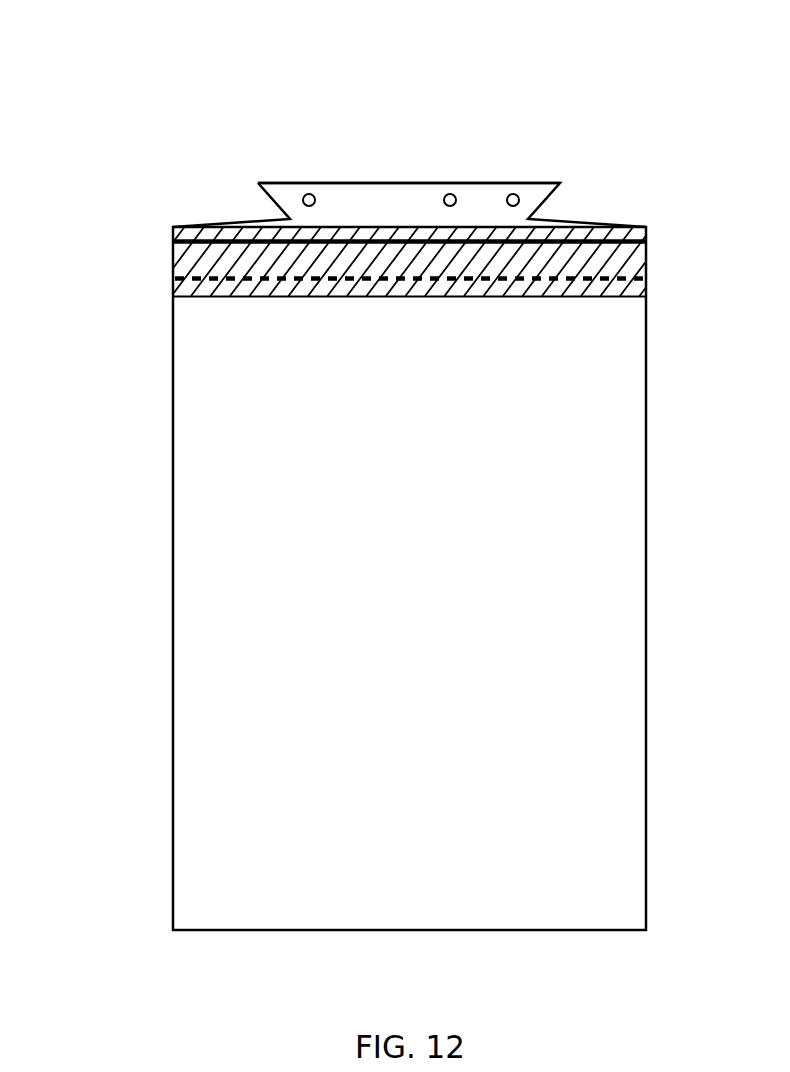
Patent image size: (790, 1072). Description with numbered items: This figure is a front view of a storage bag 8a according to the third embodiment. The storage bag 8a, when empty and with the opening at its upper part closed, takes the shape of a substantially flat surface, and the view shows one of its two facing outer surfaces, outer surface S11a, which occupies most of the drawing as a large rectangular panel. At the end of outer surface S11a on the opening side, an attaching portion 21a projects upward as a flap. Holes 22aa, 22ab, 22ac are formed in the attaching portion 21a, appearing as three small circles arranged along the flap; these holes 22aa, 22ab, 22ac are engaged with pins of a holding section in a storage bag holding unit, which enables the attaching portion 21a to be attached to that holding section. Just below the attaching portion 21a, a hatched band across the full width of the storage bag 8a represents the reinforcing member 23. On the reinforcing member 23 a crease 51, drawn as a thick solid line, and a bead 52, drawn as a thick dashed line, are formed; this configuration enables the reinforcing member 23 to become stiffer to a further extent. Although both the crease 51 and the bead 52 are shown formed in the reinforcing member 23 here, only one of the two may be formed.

The storage bag 8a is at (461, 60).
The attaching portion 21a is at (377, 183).
The hole 22aa is at (309, 194).
The hole 22ab is at (450, 194).
The hole 22ac is at (513, 194).
The reinforcing member 23 is at (587, 262).
The crease 51 is at (235, 240).
The bead 52 is at (220, 278).
The outer surface S11a is at (220, 600).